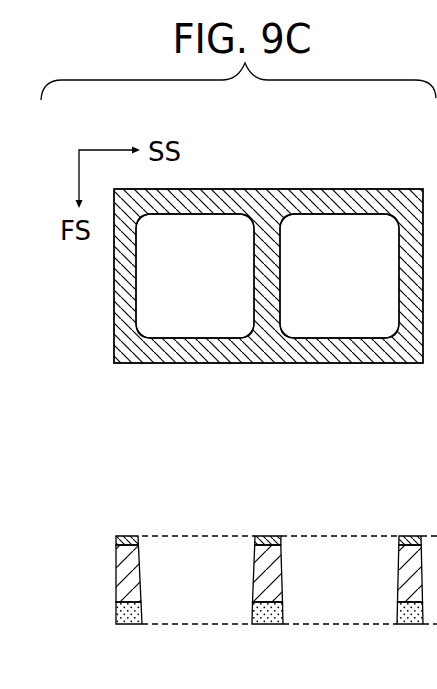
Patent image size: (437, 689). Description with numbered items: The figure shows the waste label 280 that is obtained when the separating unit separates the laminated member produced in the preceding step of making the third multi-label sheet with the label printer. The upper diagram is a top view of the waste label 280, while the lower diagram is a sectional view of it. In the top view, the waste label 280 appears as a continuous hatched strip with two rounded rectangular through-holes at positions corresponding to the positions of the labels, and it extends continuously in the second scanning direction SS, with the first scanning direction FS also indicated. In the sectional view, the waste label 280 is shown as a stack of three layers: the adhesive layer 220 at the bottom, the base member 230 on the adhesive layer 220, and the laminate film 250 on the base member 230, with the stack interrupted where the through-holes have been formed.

The waste label 280 is at (357, 178).
The laminate film 250 is at (117, 310).
The base member 230 is at (116, 571).
The adhesive layer 220 is at (116, 612).